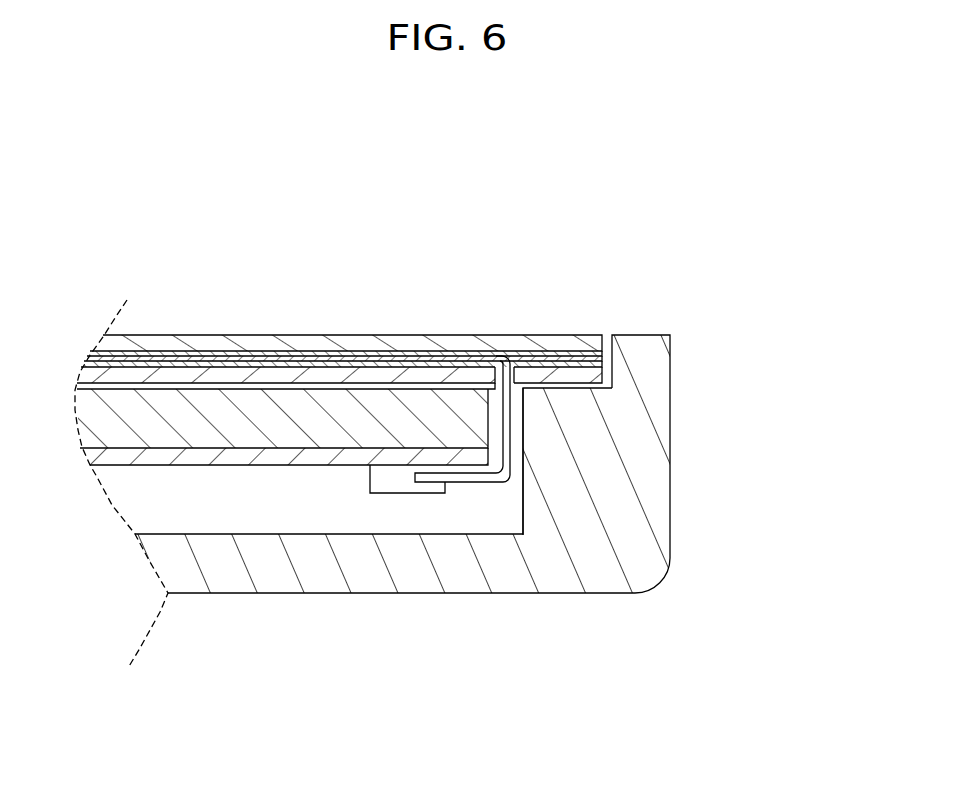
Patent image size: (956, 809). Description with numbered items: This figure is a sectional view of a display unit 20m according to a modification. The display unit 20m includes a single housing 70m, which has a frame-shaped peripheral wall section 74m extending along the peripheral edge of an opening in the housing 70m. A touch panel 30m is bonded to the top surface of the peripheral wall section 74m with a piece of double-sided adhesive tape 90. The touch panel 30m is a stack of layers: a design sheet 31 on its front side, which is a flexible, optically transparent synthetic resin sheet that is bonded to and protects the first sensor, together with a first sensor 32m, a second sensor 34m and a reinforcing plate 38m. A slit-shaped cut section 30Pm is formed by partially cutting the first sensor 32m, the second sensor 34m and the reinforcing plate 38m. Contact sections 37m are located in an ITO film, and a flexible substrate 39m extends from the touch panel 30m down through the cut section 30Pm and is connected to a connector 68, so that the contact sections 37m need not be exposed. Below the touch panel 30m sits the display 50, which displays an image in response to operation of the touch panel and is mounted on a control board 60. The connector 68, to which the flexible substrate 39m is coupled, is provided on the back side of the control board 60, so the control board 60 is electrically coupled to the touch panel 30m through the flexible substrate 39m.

The display unit 20m is at (357, 389).
The touch panel 30m is at (357, 344).
The design sheet 31 is at (548, 351).
The first sensor 32m is at (590, 350).
The second sensor 34m is at (388, 356).
The contact sections 37m is at (497, 355).
The reinforcing plate 38m is at (317, 374).
The cut section 30Pm is at (515, 367).
The flexible substrate 39m is at (493, 480).
The display 50 is at (290, 430).
The control board 60 is at (203, 458).
The connector 68 is at (392, 480).
The housing 70m is at (471, 496).
The peripheral wall section 74m is at (567, 447).
The double-sided adhesive tape 90 is at (592, 403).